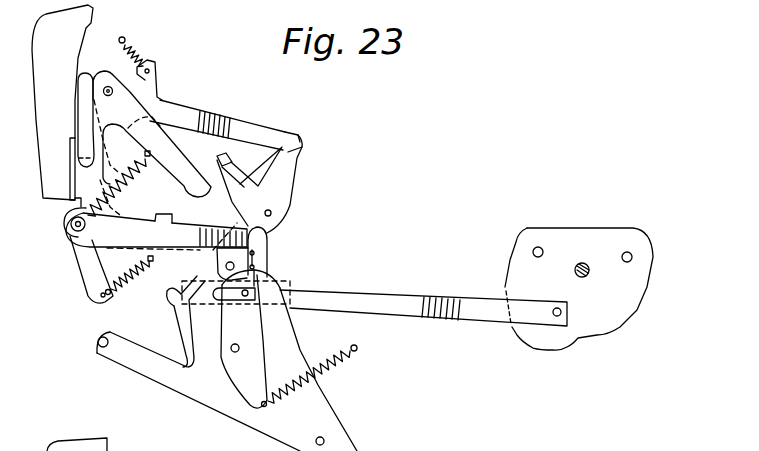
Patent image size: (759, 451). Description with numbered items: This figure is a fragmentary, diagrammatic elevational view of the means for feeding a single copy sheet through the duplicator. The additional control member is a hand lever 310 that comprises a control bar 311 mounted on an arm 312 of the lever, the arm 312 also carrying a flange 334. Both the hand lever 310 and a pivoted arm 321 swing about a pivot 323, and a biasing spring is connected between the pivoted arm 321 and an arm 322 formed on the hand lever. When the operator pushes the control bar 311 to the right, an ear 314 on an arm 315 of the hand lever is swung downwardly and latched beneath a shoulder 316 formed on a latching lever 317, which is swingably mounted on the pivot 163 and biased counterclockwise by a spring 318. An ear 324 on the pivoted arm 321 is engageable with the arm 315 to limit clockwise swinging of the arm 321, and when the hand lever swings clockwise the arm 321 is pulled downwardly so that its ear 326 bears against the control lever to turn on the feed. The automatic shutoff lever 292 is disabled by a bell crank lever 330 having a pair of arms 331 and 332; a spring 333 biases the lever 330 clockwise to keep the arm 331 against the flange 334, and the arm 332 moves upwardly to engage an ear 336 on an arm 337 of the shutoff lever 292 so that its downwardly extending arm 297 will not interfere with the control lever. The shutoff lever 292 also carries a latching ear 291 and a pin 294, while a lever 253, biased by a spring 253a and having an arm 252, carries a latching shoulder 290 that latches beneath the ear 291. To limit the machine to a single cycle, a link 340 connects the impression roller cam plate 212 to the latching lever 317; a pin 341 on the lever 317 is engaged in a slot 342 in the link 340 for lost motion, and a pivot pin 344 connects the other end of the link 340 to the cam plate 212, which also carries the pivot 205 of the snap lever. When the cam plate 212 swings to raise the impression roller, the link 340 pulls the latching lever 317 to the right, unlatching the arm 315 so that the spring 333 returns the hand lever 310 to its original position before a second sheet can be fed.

The control bar 311 is at (66, 58).
The flange 334 is at (70, 162).
The arm 331 is at (80, 131).
The hand lever 310 is at (54, 206).
The arm 312 is at (67, 215).
The pivot 323 is at (72, 235).
The arm 332 is at (173, 154).
The lever 253 is at (161, 88).
The spring 253a is at (133, 52).
The bell crank lever 330 is at (156, 109).
The arm 252 is at (227, 121).
The latching shoulder 290 is at (300, 128).
The latching ear 291 is at (301, 137).
The shutoff lever 292 is at (286, 169).
The ear 336 is at (224, 155).
The arm 337 is at (237, 180).
The spring 333 is at (128, 183).
The ear 324 is at (163, 213).
The arm 315 is at (194, 226).
The arm 322 is at (83, 265).
The pivoted arm 321 is at (163, 274).
The ear 326 is at (166, 291).
The slot 342 is at (197, 321).
The ear 314 is at (270, 232).
The shoulder 316 is at (262, 250).
The pin 294 is at (236, 266).
The arm 297 is at (262, 272).
The pin 341 is at (283, 295).
The latching lever 317 is at (251, 331).
The pivot 163 is at (239, 349).
The spring 318 is at (318, 371).
The link 340 is at (409, 292).
The pivot pin 344 is at (558, 317).
The cam plate 212 is at (633, 290).
The pivot 205 is at (585, 262).